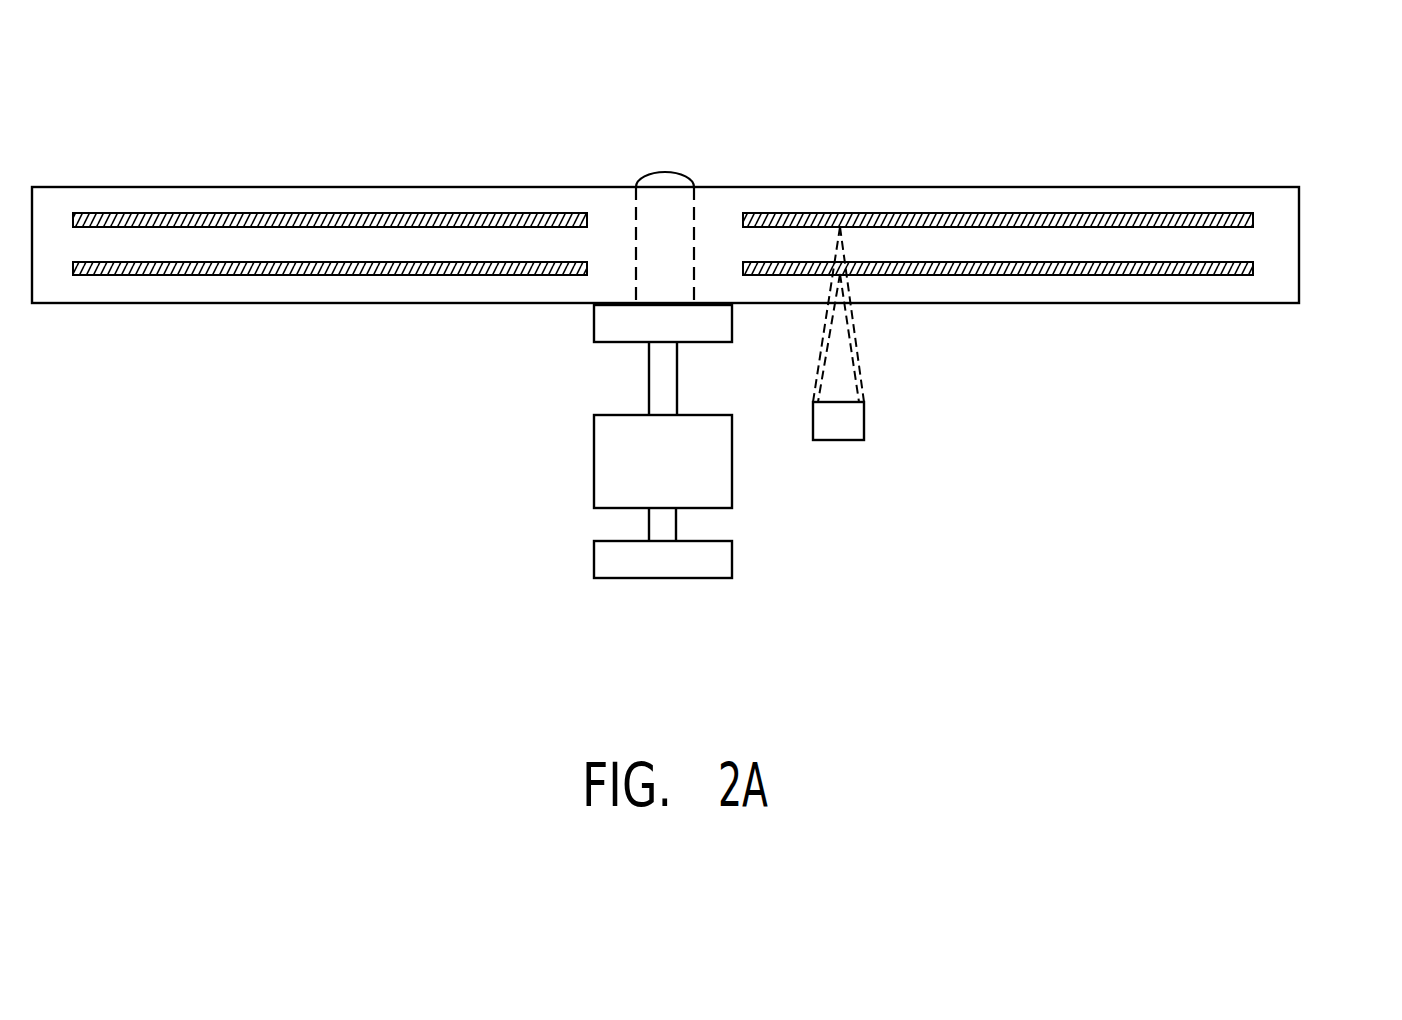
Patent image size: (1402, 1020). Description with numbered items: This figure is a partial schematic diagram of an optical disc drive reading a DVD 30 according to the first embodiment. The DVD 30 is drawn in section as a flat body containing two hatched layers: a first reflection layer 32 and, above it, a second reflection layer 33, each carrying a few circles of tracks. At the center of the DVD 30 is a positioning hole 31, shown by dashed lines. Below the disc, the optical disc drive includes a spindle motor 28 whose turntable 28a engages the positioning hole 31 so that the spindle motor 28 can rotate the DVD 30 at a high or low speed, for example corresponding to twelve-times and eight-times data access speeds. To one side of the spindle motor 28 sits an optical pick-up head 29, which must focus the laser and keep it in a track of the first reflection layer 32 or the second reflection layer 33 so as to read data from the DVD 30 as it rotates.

The DVD 30 is at (1303, 185).
The second reflection layer 33 is at (1253, 218).
The first reflection layer 32 is at (1253, 268).
The positioning hole 31 is at (699, 216).
The turntable 28a is at (594, 324).
The spindle motor 28 is at (732, 462).
The optical pick-up head 29 is at (864, 420).